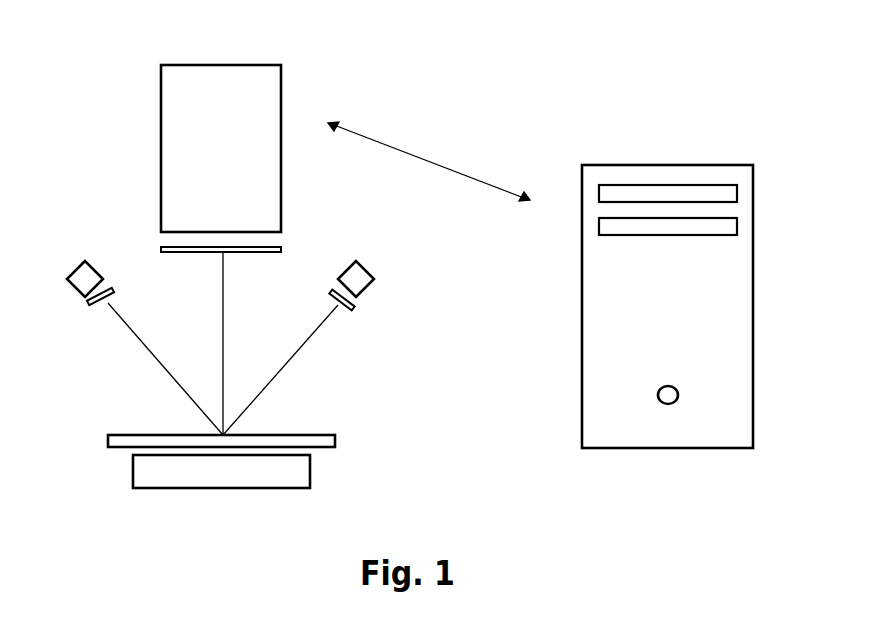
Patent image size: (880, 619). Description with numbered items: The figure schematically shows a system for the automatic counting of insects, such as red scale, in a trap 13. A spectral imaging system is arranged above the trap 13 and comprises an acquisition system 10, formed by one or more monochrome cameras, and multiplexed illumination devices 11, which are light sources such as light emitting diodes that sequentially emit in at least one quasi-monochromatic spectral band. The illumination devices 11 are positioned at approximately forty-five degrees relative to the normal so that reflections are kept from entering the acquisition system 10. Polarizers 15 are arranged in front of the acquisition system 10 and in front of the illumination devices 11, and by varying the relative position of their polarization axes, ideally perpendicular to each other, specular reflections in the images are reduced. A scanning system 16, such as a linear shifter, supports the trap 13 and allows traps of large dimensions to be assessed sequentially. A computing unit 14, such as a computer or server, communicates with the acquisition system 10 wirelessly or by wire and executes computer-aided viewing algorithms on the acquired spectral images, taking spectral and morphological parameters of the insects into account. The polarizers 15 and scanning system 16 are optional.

The acquisition system 10 is at (161, 71).
The illumination devices 11 is at (104, 279).
The trap 13 is at (336, 436).
The computing unit 14 is at (582, 431).
The polarizers 15 is at (282, 247).
The scanning system 16 is at (311, 468).